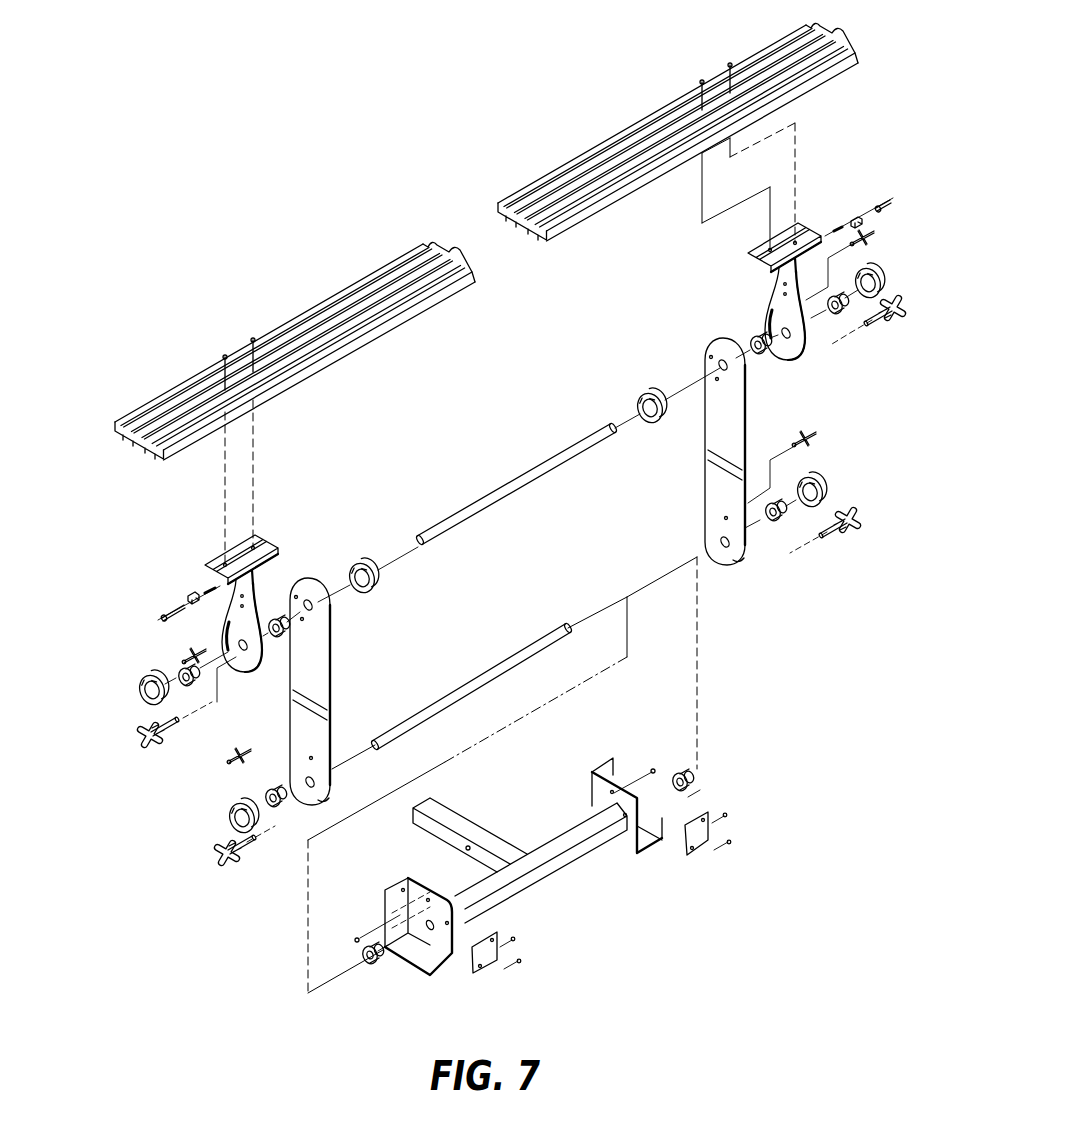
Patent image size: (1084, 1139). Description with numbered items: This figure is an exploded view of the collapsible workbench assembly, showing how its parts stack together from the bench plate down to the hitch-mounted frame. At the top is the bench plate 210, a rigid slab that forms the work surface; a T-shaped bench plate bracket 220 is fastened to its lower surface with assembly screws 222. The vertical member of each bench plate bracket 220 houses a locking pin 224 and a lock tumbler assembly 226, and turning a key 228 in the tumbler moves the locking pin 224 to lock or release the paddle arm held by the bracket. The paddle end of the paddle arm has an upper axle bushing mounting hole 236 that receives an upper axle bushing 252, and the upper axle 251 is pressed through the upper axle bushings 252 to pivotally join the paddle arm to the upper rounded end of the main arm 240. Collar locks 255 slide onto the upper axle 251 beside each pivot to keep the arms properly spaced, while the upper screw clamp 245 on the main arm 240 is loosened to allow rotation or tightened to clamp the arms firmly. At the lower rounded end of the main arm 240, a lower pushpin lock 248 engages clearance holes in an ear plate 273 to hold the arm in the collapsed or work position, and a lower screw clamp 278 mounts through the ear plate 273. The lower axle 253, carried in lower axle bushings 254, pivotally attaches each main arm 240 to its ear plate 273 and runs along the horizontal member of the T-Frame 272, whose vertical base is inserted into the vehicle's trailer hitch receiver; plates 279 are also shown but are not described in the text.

The bench plate 210 is at (160, 400).
The bench plate bracket 220 is at (270, 540).
The assembly screw 222 is at (253, 340).
The locking pin 224 is at (208, 588).
The lock tumbler assembly 226 is at (190, 597).
The key 228 is at (168, 612).
The upper axle bushing mounting hole 236 is at (856, 215).
The main arm 240 is at (332, 693).
The upper screw clamp 245 is at (150, 748).
The lower pushpin lock 248 is at (186, 655).
The upper axle 251 is at (548, 455).
The upper axle bushing 252 is at (200, 682).
The lower axle 253 is at (500, 660).
The lower axle bushing 254 is at (276, 810).
The collar lock 255 is at (146, 684).
The T-Frame 272 is at (470, 826).
The ear plate 273 is at (405, 883).
The lower screw clamp 278 is at (225, 868).
The mounting plate 279 is at (497, 958).